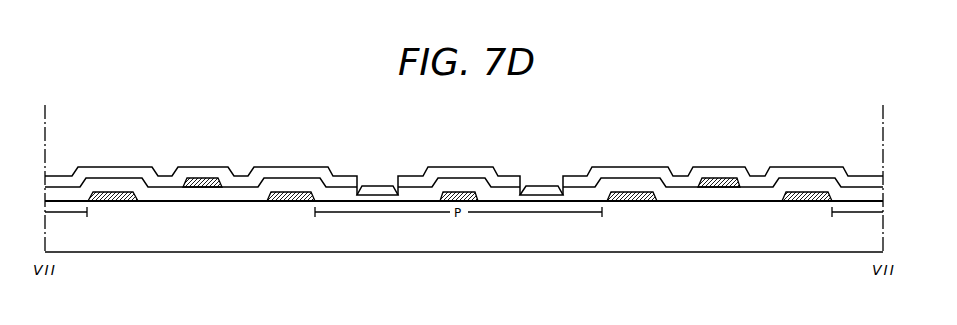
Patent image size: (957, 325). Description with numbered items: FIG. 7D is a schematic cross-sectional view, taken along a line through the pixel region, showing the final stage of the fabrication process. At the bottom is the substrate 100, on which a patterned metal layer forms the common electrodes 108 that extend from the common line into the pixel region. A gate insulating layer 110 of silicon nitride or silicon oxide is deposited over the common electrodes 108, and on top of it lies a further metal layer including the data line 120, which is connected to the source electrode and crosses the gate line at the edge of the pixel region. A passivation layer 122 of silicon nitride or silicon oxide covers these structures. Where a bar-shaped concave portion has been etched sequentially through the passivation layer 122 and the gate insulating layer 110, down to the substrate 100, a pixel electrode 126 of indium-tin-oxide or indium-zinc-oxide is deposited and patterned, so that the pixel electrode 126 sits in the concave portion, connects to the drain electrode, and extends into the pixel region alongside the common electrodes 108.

The substrate 100 is at (869, 240).
The common electrode 108 is at (110, 192).
The gate insulating layer 110 is at (753, 187).
The data line 120 is at (197, 179).
The passivation layer 122 is at (323, 167).
The pixel electrode 126 is at (380, 186).